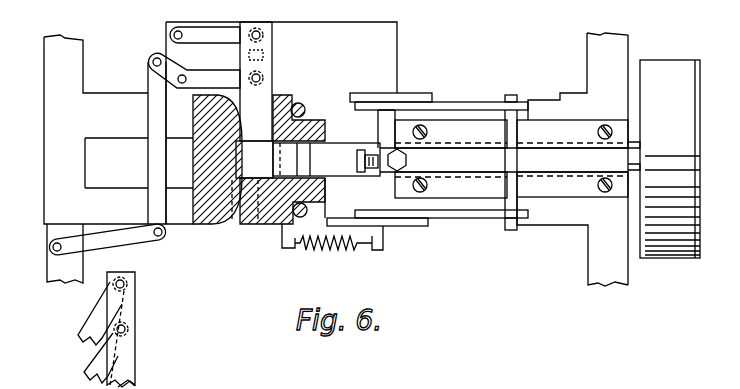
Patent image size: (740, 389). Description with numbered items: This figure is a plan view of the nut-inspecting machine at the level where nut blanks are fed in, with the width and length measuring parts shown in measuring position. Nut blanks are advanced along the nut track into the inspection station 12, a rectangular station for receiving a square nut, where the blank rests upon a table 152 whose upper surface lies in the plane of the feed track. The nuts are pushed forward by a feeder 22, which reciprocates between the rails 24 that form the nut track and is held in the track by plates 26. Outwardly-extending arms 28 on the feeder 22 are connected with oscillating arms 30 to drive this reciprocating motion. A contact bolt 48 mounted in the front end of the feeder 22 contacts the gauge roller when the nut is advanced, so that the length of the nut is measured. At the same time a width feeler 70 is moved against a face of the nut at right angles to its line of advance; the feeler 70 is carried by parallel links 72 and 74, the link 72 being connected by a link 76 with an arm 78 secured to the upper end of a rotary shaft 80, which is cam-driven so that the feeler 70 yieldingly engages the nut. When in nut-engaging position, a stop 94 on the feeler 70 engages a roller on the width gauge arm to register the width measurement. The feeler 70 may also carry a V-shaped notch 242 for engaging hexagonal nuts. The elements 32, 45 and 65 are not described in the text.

The inspection station 12 is at (218, 117).
The feeder 22 is at (338, 152).
The rails 24 is at (383, 154).
The plates 26 is at (511, 159).
The outwardly-extending arms 28 is at (512, 97).
The oscillating arms 30 is at (397, 98).
The plate 32 is at (460, 110).
The pin 45 is at (258, 227).
The contact bolt 48 is at (361, 150).
The slot 65 is at (256, 56).
The feeler 70 is at (137, 345).
The link 72 is at (90, 358).
The link 74 is at (82, 325).
The link 76 is at (157, 158).
The arm 78 is at (75, 258).
The rotary shaft 80 is at (53, 247).
The stop 94 is at (274, 58).
The table 152 is at (254, 159).
The V-shaped notch 242 is at (134, 385).